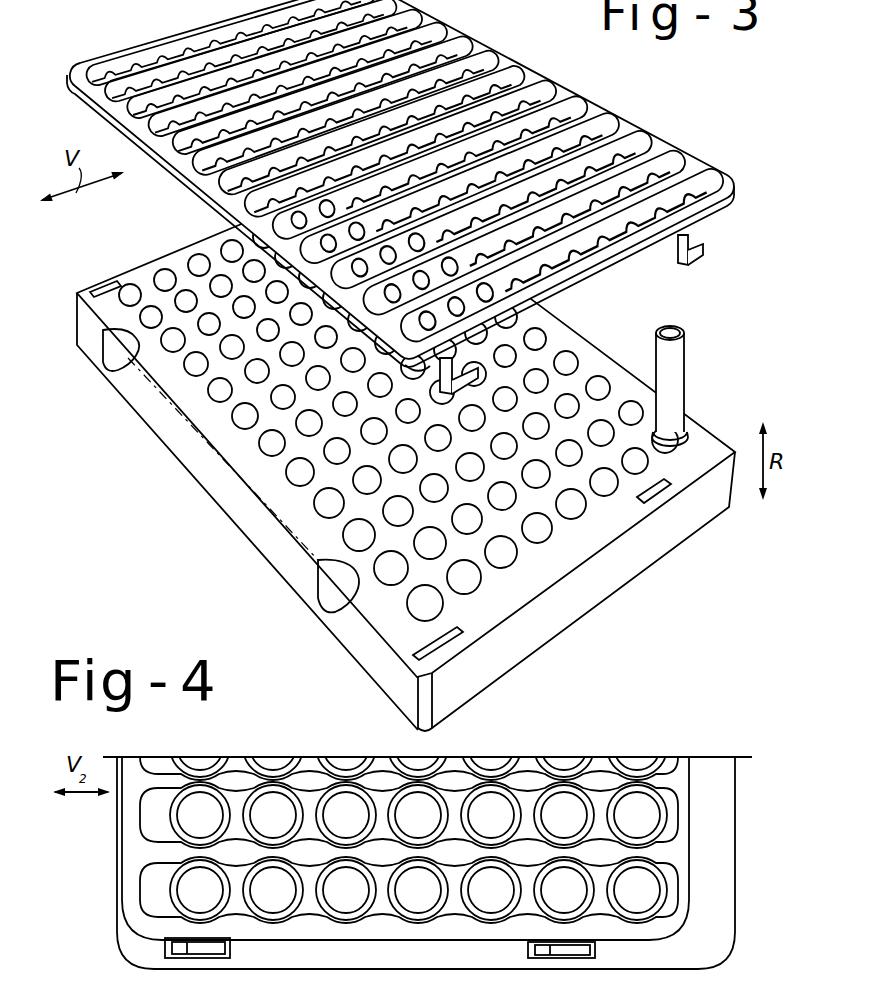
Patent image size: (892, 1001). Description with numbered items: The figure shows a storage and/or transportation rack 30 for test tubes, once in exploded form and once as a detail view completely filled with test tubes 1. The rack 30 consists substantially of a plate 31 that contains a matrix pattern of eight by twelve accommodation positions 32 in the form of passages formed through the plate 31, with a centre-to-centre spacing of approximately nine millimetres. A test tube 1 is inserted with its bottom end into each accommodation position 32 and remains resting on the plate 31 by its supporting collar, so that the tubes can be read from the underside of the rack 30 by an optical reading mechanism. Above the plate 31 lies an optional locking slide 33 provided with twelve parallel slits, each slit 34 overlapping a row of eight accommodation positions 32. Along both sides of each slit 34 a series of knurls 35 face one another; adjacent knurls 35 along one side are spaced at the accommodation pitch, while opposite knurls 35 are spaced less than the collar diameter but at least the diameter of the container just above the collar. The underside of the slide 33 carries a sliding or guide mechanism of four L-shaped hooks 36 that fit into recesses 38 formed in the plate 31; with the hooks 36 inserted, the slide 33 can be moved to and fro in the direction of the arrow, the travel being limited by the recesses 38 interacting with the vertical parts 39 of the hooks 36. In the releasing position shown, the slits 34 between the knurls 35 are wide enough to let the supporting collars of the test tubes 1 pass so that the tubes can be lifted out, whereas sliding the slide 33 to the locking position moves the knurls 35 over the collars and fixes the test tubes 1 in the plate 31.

In FIG. 3, the test tube 1 is at (684, 376).
In FIG. 4, the test tube 1 is at (663, 823).
In FIG. 3, the rack 30 is at (413, 452).
In FIG. 3, the plate 31 is at (706, 438).
In FIG. 3, the accommodation position 32 is at (568, 361).
In FIG. 3, the locking slide 33 is at (411, 197).
In FIG. 3, the slit 34 is at (665, 158).
In FIG. 4, the knurl 35 is at (602, 858).
In FIG. 3, the L-shaped hook 36 is at (596, 313).
In FIG. 3, the recess 38 is at (665, 486).
In FIG. 3, the vertical part 39 is at (697, 238).